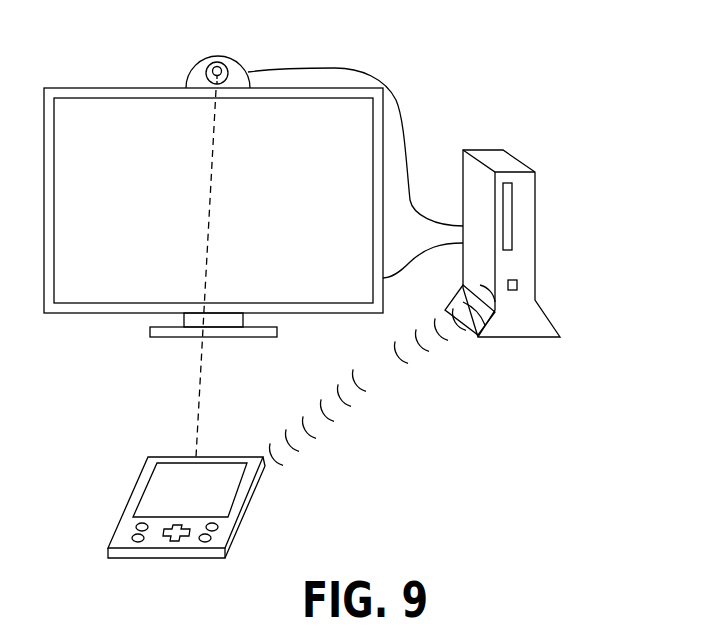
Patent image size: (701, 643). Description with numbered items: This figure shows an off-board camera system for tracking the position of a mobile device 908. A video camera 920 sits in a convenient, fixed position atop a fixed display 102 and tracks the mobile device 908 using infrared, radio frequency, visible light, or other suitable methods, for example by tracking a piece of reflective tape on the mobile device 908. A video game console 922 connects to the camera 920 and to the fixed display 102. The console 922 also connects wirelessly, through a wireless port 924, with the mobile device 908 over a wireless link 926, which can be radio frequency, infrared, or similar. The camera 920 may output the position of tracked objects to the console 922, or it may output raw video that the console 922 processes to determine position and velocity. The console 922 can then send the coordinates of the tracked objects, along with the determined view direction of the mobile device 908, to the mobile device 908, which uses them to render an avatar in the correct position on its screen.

The fixed display 102 is at (102, 88).
The video camera 920 is at (226, 57).
The video game console 922 is at (517, 158).
The wireless port 924 is at (517, 283).
The wireless link 926 is at (362, 394).
The mobile device 908 is at (160, 455).